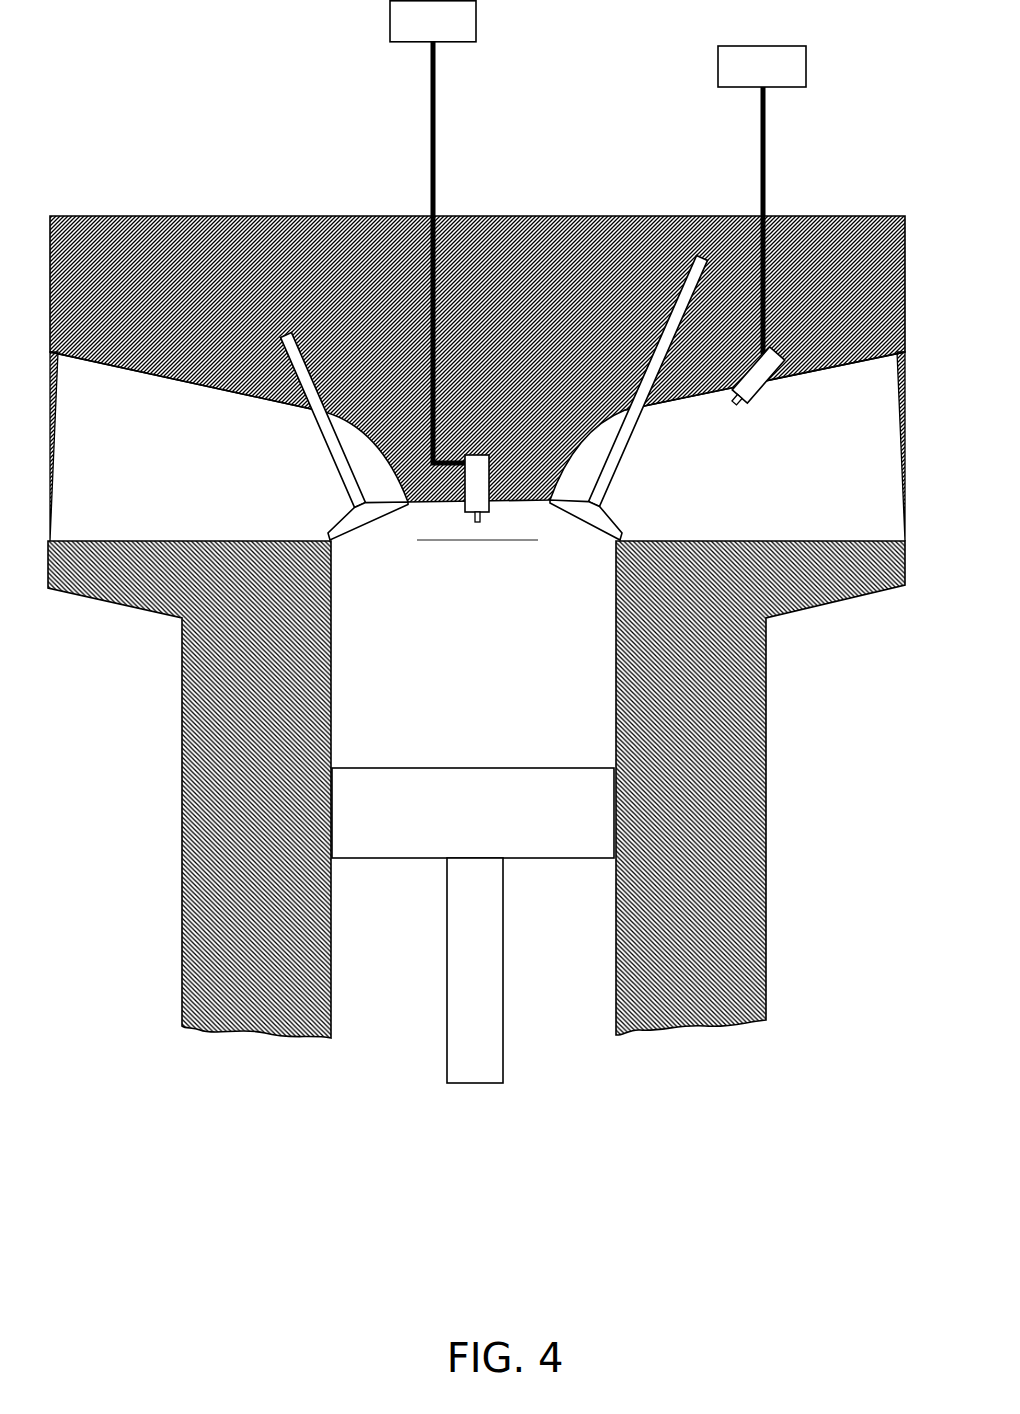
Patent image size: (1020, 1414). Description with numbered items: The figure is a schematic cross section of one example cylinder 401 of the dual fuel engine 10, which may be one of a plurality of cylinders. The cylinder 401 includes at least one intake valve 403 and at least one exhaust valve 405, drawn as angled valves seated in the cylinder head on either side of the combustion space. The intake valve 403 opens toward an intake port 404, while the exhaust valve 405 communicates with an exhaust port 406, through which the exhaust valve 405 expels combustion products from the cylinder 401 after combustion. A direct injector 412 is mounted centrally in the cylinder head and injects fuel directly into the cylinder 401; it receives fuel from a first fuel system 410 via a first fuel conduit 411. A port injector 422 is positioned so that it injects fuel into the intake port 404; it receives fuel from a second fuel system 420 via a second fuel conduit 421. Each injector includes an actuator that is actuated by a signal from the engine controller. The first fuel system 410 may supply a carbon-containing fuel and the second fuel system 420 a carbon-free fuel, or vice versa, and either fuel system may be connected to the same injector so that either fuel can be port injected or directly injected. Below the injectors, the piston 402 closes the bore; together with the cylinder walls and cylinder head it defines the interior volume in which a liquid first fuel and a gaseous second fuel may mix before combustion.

The engine 10 is at (820, 164).
The cylinder 401 is at (490, 592).
The piston 402 is at (456, 823).
The intake valve 403 is at (633, 437).
The intake port 404 is at (779, 480).
The exhaust valve 405 is at (317, 428).
The exhaust port 406 is at (188, 470).
The first fuel system 410 is at (416, 32).
The first fuel conduit 411 is at (431, 79).
The direct injector 412 is at (470, 516).
The second fuel system 420 is at (745, 76).
The second fuel conduit 421 is at (761, 131).
The port injector 422 is at (772, 383).